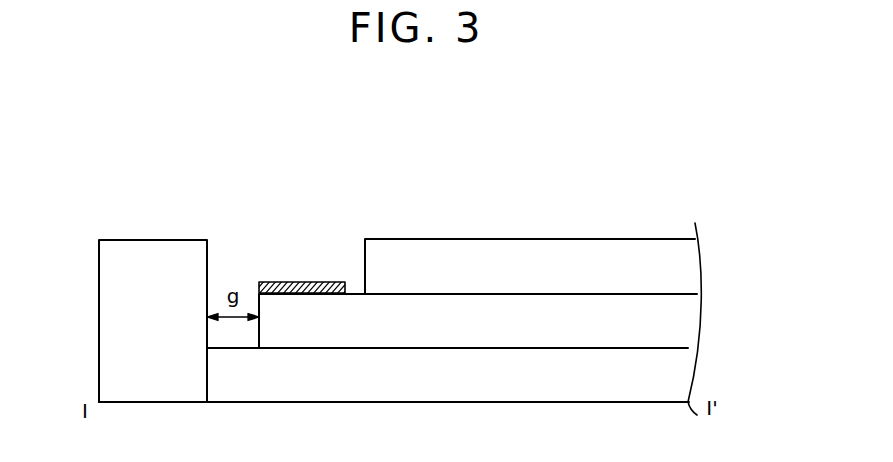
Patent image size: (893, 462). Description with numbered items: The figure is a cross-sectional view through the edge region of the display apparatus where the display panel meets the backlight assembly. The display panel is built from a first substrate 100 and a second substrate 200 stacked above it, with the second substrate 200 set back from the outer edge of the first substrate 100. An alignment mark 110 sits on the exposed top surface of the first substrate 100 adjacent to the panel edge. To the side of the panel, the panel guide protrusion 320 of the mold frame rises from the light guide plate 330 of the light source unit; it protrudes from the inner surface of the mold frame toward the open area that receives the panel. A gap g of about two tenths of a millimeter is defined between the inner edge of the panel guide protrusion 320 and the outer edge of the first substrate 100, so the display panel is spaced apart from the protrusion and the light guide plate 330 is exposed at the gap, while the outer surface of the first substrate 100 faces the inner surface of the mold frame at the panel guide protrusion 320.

The alignment mark 110 is at (302, 282).
The first substrate 100 is at (683, 324).
The second substrate 200 is at (685, 262).
The light guide plate 330 is at (678, 377).
The panel guide protrusion 320 is at (113, 322).